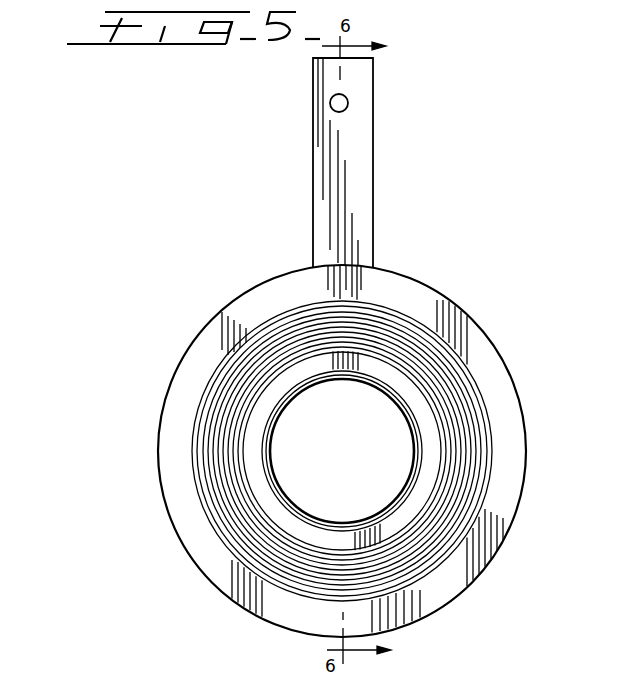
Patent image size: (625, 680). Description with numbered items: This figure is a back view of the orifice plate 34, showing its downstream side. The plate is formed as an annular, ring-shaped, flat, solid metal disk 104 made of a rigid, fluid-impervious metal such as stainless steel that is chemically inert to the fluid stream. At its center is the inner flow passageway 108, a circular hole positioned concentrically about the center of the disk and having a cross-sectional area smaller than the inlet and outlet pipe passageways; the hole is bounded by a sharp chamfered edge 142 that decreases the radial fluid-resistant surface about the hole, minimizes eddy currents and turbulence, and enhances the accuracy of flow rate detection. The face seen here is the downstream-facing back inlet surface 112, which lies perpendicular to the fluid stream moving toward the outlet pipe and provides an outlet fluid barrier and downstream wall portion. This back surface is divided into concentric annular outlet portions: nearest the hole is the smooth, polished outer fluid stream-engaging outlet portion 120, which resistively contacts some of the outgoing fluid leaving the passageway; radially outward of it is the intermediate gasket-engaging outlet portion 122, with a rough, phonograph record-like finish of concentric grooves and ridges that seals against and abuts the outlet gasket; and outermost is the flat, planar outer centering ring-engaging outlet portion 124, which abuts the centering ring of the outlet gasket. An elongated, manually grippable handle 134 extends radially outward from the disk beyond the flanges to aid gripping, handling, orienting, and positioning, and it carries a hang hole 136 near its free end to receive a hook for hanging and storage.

The valve disc 34 is at (504, 529).
The disk 104 is at (250, 610).
The inner flow passageway 108 is at (384, 511).
The back inlet surface 112 is at (176, 435).
The outer fluid stream-engaging outlet portion 120 is at (413, 391).
The intermediate gasket-engaging outlet portion 122 is at (484, 433).
The outer centering ring-engaging outlet portion 124 is at (432, 312).
The handle 134 is at (313, 161).
The hang hole 136 is at (348, 105).
The sharp chamfered edge 142 is at (268, 468).